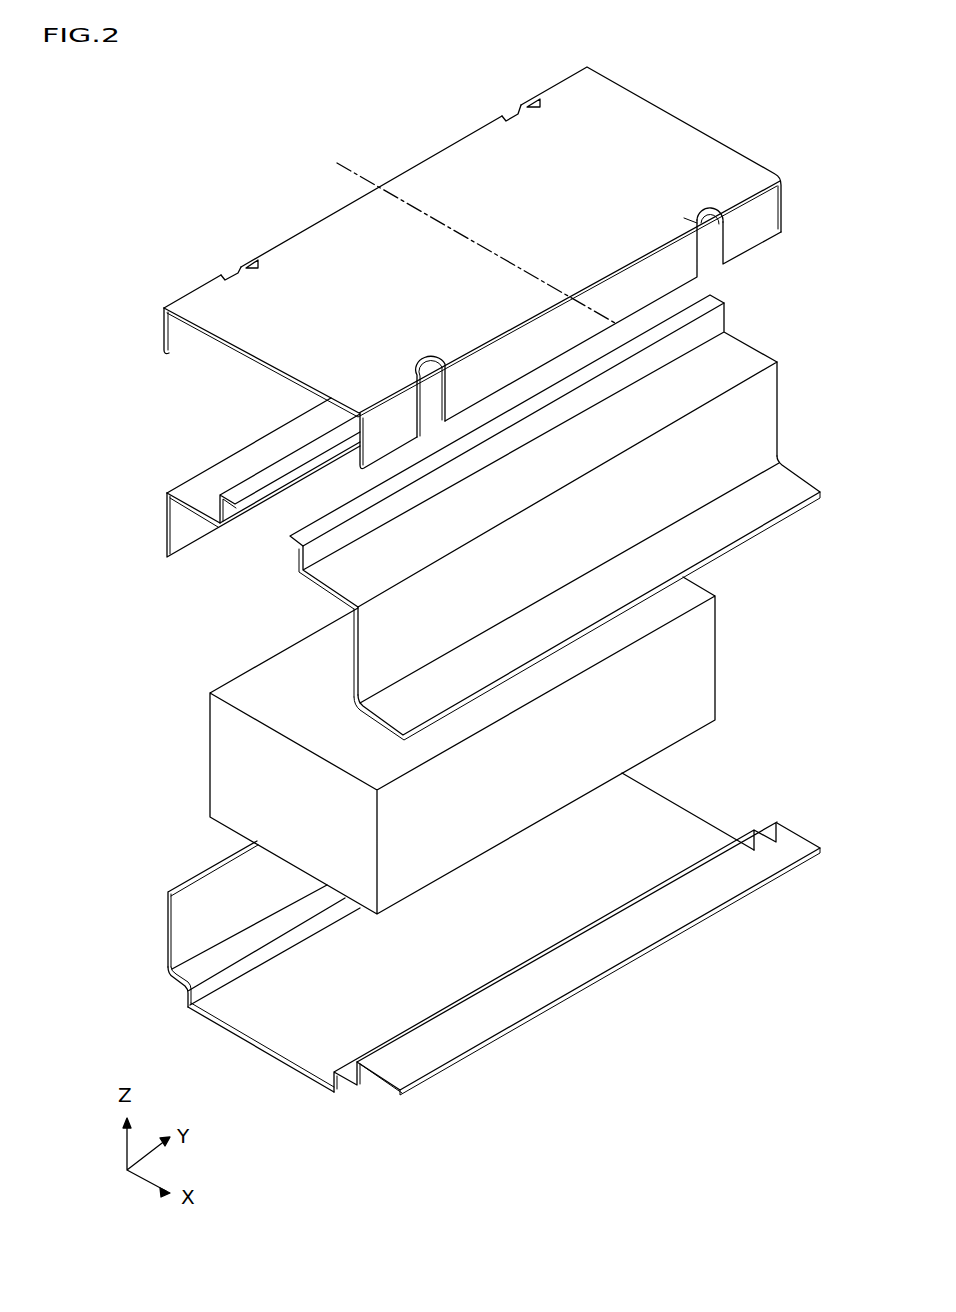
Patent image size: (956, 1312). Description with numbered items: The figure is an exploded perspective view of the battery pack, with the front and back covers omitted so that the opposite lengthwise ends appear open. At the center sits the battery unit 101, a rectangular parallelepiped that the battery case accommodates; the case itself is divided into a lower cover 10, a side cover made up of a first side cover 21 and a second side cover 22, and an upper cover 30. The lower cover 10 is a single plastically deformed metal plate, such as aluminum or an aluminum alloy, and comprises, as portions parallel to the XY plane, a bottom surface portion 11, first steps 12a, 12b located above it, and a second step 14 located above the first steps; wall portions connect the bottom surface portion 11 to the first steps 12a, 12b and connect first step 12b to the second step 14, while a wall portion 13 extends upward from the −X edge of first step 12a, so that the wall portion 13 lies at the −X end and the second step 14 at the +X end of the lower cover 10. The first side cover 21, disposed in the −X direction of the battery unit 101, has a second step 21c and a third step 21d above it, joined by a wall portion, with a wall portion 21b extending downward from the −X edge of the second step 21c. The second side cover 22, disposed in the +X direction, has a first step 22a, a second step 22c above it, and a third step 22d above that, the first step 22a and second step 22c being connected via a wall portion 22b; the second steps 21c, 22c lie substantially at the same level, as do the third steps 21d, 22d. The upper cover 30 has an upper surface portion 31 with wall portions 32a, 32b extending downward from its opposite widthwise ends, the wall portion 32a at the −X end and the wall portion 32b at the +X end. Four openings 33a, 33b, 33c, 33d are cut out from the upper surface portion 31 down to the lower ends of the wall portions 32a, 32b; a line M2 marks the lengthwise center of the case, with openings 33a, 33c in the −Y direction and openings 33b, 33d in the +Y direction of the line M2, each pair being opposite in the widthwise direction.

The lower cover 10 is at (287, 1081).
The bottom surface portion 11 is at (257, 1030).
The first step 12a is at (200, 970).
The first step 12b is at (352, 1070).
The wall portion 13 is at (200, 914).
The second step 14 is at (443, 1045).
The first side cover 21 is at (86, 422).
The wall portion 21b is at (165, 527).
The second step 21c is at (207, 483).
The third step 21d is at (245, 485).
The second side cover 22 is at (860, 264).
The first step 22a is at (790, 487).
The wall portion 22b is at (760, 411).
The second step 22c is at (738, 358).
The third step 22d is at (716, 298).
The upper cover 30 is at (162, 280).
The upper surface portion 31 is at (632, 120).
The wall portion 32a is at (172, 338).
The wall portion 32b is at (768, 216).
The opening 33a is at (240, 273).
The opening 33b is at (508, 118).
The opening 33c is at (412, 370).
The opening 33d is at (709, 212).
The battery unit 101 is at (237, 757).
The line M2 is at (360, 177).